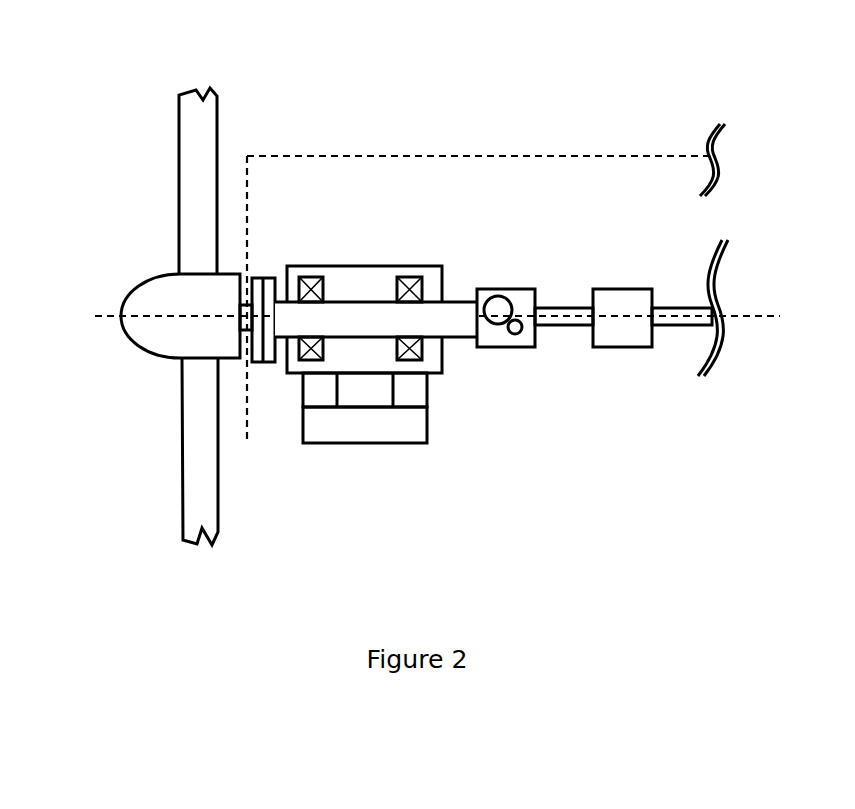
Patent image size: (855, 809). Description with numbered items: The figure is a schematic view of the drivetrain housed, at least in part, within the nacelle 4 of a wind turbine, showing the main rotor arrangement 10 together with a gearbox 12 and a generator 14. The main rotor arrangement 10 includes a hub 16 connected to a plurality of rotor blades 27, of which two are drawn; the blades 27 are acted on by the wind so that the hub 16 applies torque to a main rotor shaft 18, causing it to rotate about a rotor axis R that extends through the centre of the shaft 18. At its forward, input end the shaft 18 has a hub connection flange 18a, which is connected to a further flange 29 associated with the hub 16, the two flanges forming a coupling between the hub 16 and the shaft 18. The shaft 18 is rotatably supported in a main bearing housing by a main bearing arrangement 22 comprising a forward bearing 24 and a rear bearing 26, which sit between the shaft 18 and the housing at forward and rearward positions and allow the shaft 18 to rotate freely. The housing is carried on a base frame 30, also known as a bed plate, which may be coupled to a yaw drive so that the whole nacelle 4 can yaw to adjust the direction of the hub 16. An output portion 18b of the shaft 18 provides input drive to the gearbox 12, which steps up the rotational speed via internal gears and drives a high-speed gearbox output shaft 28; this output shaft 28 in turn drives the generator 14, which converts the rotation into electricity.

The main rotor arrangement 10 is at (116, 95).
The nacelle 4 is at (500, 156).
The rotor axis R is at (106, 317).
The rotor blades 27 is at (193, 208).
The hub 16 is at (173, 328).
The further flange 29 is at (258, 365).
The main rotor shaft 18 is at (362, 300).
The hub connection flange 18a is at (275, 278).
The output portion 18b is at (467, 302).
The forward bearing 24 is at (310, 277).
The rear bearing 26 is at (410, 277).
The main bearing arrangement 22 is at (455, 386).
The base frame 30 is at (378, 443).
The gearbox 12 is at (497, 348).
The high-speed gearbox output shaft 28 is at (555, 308).
The generator 14 is at (622, 348).